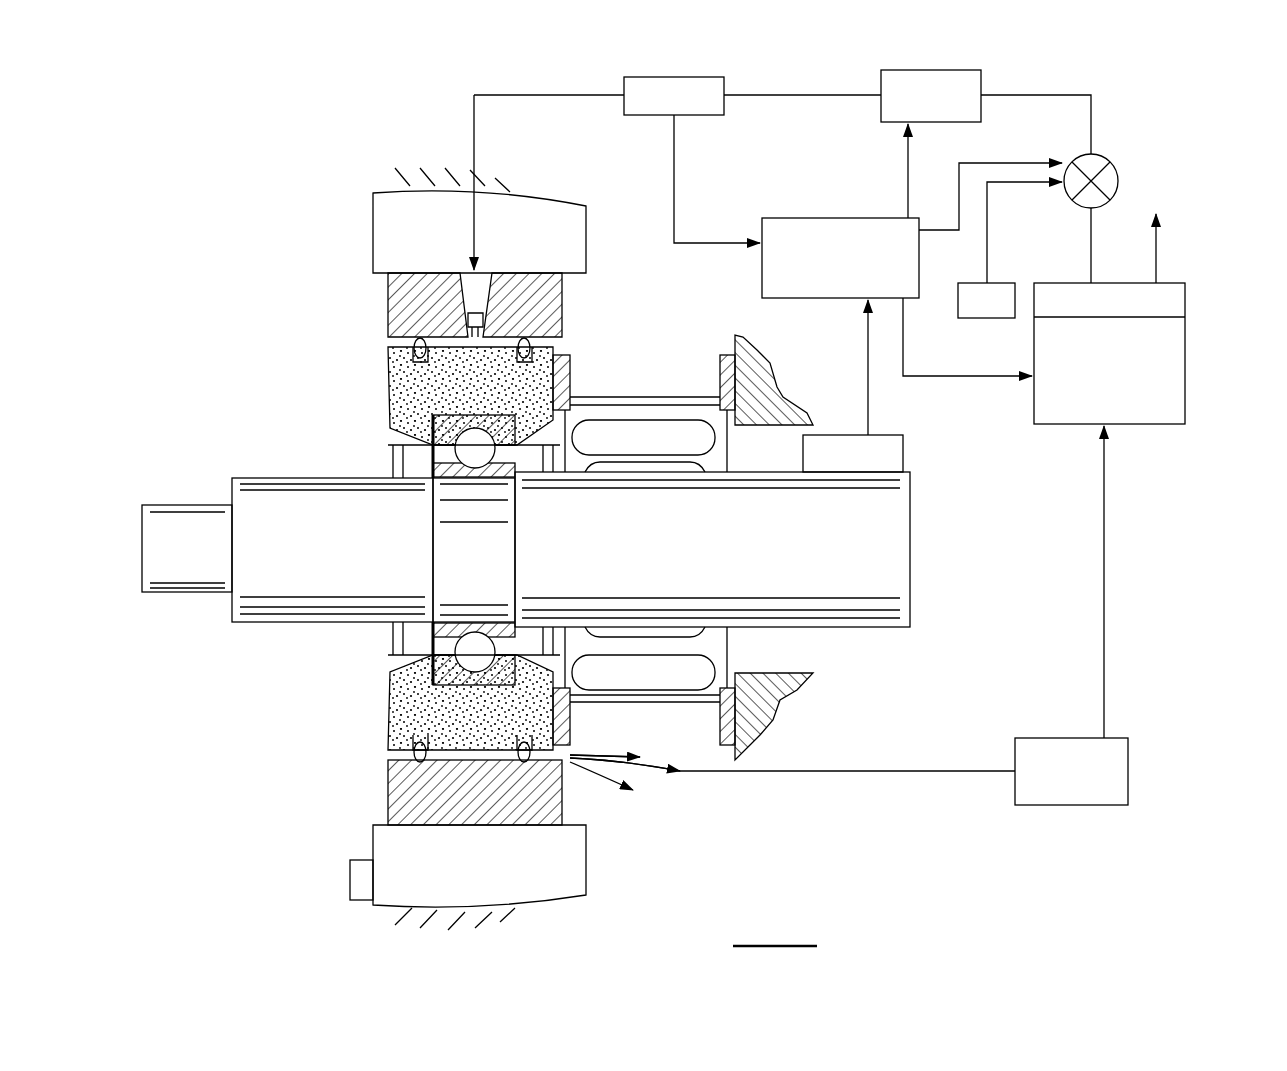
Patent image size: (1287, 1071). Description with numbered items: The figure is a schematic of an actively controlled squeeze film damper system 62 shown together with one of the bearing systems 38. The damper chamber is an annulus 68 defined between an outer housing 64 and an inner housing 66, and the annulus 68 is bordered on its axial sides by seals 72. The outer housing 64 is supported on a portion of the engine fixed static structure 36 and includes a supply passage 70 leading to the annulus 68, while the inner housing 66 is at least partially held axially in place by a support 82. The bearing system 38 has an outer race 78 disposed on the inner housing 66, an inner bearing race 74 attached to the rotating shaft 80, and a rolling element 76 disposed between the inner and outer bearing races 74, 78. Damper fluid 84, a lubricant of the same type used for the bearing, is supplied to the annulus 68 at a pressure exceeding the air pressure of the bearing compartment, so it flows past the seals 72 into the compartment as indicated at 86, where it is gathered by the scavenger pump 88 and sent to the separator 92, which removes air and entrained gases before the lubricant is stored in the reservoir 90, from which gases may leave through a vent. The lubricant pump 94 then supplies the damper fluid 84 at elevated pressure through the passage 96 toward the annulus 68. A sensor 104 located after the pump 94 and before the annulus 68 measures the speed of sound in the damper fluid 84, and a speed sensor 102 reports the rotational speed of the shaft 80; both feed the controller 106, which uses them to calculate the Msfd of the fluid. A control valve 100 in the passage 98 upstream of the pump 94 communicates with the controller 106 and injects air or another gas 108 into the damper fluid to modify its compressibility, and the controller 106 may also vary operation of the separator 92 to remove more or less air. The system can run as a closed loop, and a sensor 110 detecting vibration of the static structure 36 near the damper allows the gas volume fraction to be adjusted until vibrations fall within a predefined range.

The engine fixed static structure 36 is at (490, 860).
The bearing system 38 is at (297, 440).
The active squeeze film damper system 62 is at (178, 248).
The outer housing 64 is at (408, 792).
The inner housing 66 is at (410, 712).
The annulus 68 is at (505, 755).
The supply passage 70 is at (452, 298).
The seals 72 is at (410, 350).
The inner bearing race 74 is at (398, 462).
The rolling element 76 is at (480, 450).
The outer race 78 is at (418, 420).
The shaft 80 is at (832, 630).
The support 82 is at (640, 395).
The damper fluid 84 is at (474, 285).
The damper fluid flow into bearing compartment 86 is at (674, 790).
The scavenger pump 88 is at (1122, 805).
The lubricant reservoir 90 is at (1167, 300).
The separator 92 is at (1152, 424).
The lubricant pump 94 is at (952, 70).
The passage 96 is at (795, 95).
The passage 98 is at (1091, 110).
The control valve 100 is at (1112, 170).
The speed sensor 102 is at (903, 450).
The sensor 104 is at (724, 80).
The controller 106 is at (798, 218).
The air or other gas 108 is at (1000, 283).
The vibration sensor 110 is at (358, 880).